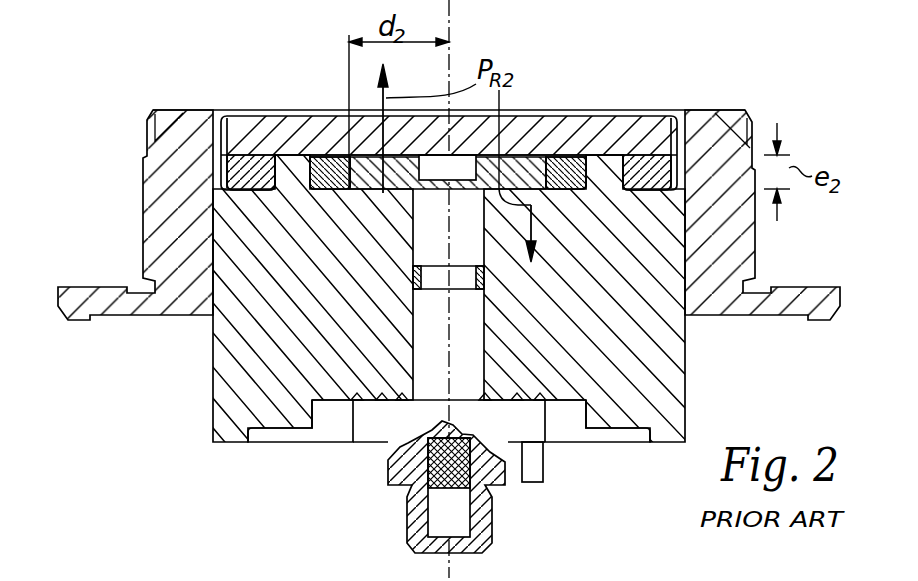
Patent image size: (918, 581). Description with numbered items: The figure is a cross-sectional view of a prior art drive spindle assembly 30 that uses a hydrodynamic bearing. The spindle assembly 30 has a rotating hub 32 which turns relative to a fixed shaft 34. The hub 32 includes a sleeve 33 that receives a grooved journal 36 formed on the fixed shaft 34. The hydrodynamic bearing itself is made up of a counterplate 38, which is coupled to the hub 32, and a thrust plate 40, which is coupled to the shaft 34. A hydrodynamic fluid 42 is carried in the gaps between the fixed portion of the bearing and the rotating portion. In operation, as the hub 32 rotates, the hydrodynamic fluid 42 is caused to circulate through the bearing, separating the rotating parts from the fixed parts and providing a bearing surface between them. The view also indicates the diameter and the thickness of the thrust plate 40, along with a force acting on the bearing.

The drive spindle assembly 30 is at (100, 91).
The rotating hub 32 is at (147, 192).
The sleeve 33 is at (672, 346).
The fixed shaft 34 is at (433, 344).
The grooved journal 36 is at (468, 341).
The counterplate 38 is at (642, 127).
The thrust plate 40 is at (326, 188).
The hydrodynamic fluid 42 is at (570, 157).